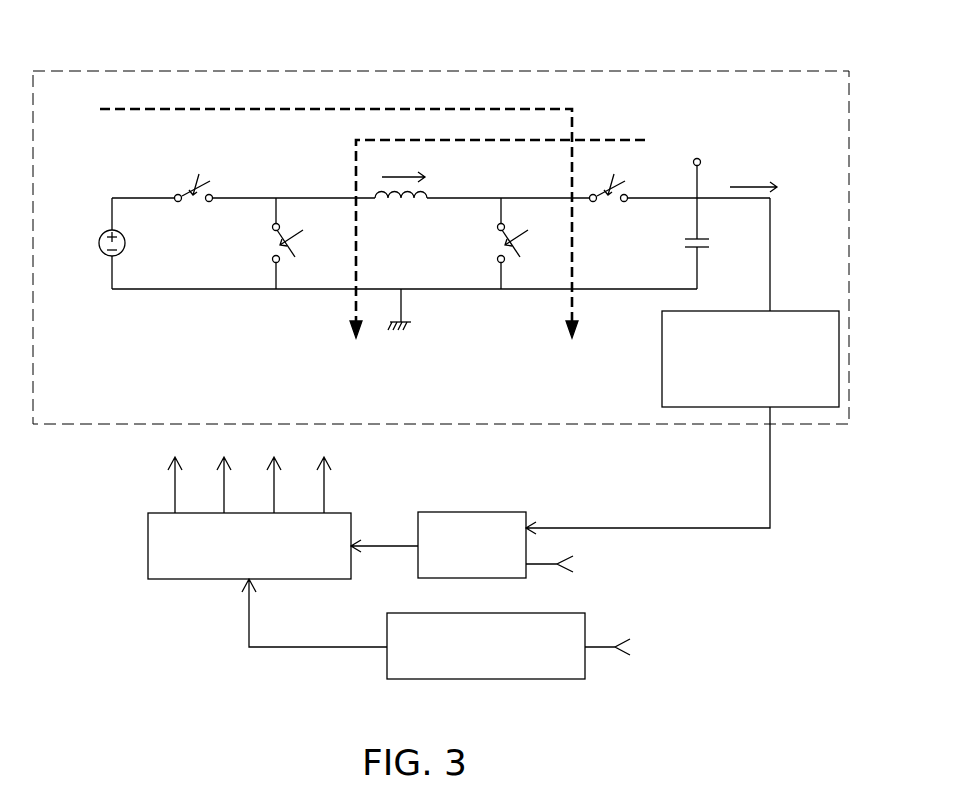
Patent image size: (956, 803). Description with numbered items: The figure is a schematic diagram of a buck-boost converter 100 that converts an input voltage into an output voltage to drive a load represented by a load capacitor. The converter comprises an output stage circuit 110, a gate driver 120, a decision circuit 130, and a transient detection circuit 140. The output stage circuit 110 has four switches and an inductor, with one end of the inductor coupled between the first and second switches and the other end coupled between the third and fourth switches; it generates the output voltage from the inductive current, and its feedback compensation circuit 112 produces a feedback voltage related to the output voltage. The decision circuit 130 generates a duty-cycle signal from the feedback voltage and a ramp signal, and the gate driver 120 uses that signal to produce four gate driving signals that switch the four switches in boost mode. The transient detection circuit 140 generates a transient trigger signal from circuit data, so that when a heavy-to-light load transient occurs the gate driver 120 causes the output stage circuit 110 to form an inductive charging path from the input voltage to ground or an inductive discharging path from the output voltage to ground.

The buck-boost converter 100 is at (100, 45).
The output stage circuit 110 is at (418, 71).
The feedback compensation circuit 112 is at (662, 356).
The gate driver 120 is at (148, 547).
The decision circuit 130 is at (473, 512).
The transient detection circuit 140 is at (483, 681).